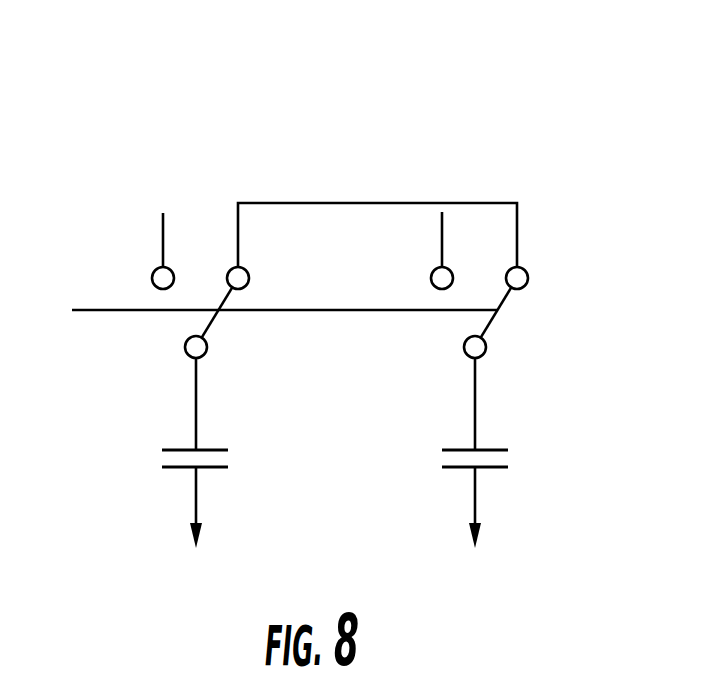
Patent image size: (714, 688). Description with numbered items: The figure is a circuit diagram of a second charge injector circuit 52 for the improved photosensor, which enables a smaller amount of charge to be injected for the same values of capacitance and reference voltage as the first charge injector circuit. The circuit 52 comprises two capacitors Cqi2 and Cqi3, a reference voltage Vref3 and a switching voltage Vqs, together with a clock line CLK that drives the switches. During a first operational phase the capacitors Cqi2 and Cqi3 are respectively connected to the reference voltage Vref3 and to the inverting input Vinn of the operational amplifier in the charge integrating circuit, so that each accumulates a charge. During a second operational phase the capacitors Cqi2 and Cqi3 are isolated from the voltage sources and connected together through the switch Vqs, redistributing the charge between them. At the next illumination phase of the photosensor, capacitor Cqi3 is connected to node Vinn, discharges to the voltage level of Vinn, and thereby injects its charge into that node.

The second charge injector circuit 52 is at (506, 136).
The reference voltage Vref3 is at (135, 234).
The inverting input Vinn is at (415, 250).
The switching voltage Vqs is at (377, 221).
The clock-controlled switches CLK is at (270, 322).
The capacitor Cqi2 is at (213, 453).
The capacitor Cqi3 is at (493, 453).